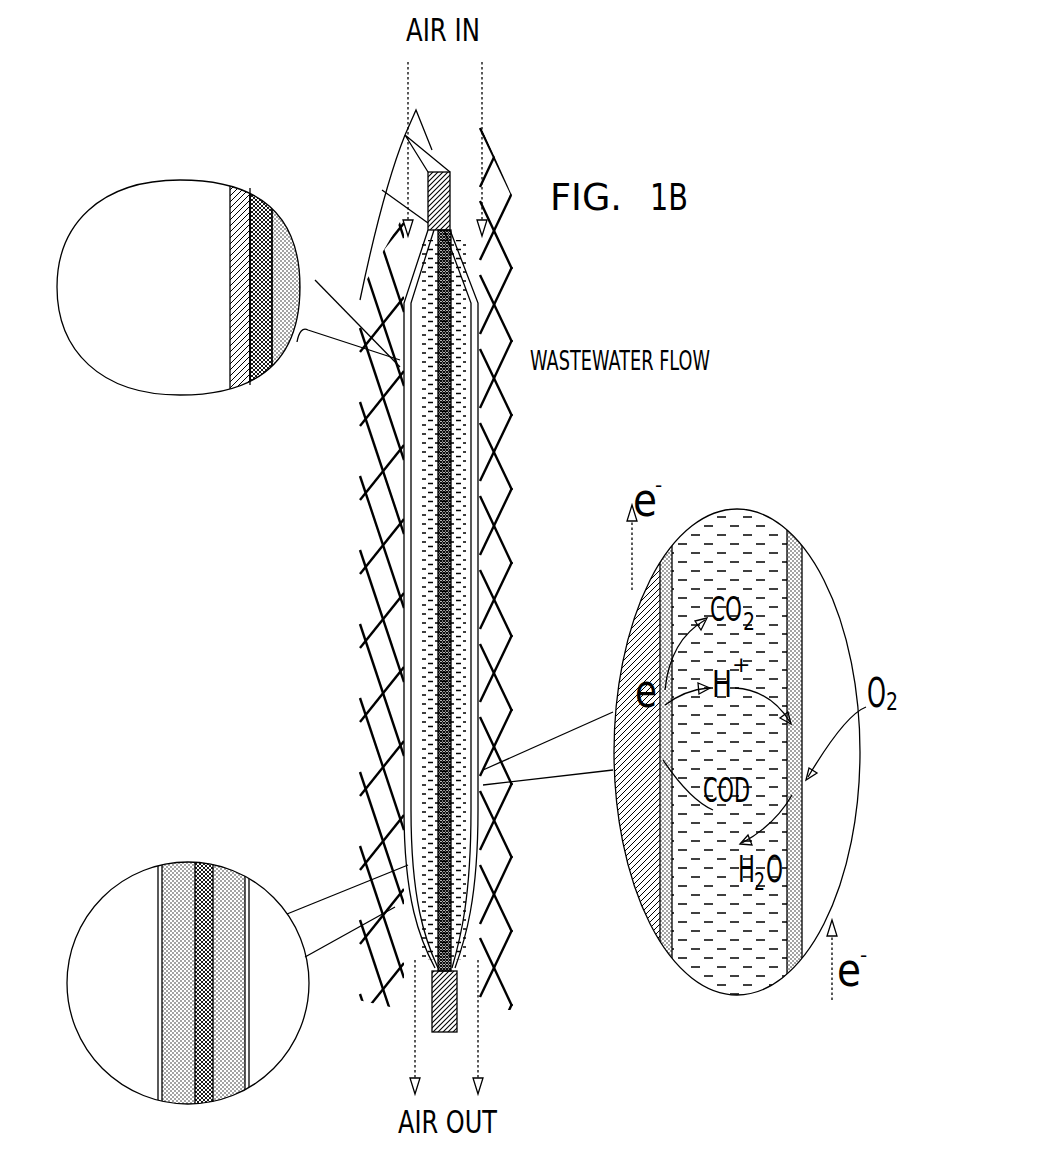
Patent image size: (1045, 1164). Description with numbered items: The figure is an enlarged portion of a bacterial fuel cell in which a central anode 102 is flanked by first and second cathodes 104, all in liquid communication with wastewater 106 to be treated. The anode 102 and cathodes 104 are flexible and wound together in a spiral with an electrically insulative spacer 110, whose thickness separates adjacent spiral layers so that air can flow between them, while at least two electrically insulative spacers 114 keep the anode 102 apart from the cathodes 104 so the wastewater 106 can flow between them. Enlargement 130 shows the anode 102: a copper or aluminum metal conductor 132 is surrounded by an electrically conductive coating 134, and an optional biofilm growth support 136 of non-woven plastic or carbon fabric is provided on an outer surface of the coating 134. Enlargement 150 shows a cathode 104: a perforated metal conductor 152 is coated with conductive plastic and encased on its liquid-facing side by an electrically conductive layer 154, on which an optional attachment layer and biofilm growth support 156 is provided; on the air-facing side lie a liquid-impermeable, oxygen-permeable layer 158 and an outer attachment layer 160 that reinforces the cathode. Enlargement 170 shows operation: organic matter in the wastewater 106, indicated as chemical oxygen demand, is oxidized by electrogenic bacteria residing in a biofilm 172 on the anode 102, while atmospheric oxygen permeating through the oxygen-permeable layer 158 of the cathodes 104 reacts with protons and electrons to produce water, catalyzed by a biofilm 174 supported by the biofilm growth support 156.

The anode 102 is at (410, 521).
The cathodes 104 is at (388, 604).
The wastewater 106 is at (725, 565).
The electrically insulative spacer 110 is at (483, 262).
The electrically insulative spacers 114 is at (488, 313).
The enlargement 130 is at (128, 1092).
The metal conductor 132 is at (197, 953).
The electrically conductive coating 134 is at (177, 1037).
The biofilm growth support 136 is at (157, 903).
The enlargement 150 is at (120, 194).
The perforated metal conductor 152 is at (258, 378).
The electrically conductive layer 154 is at (280, 222).
The attachment layer and biofilm growth support 156 is at (315, 280).
The liquid-impermeable, oxygen-permeable layer 158 is at (254, 188).
The attachment layer 160 is at (232, 186).
The enlargement 170 is at (828, 580).
The biofilm 172 is at (663, 945).
The biofilm 174 is at (780, 942).